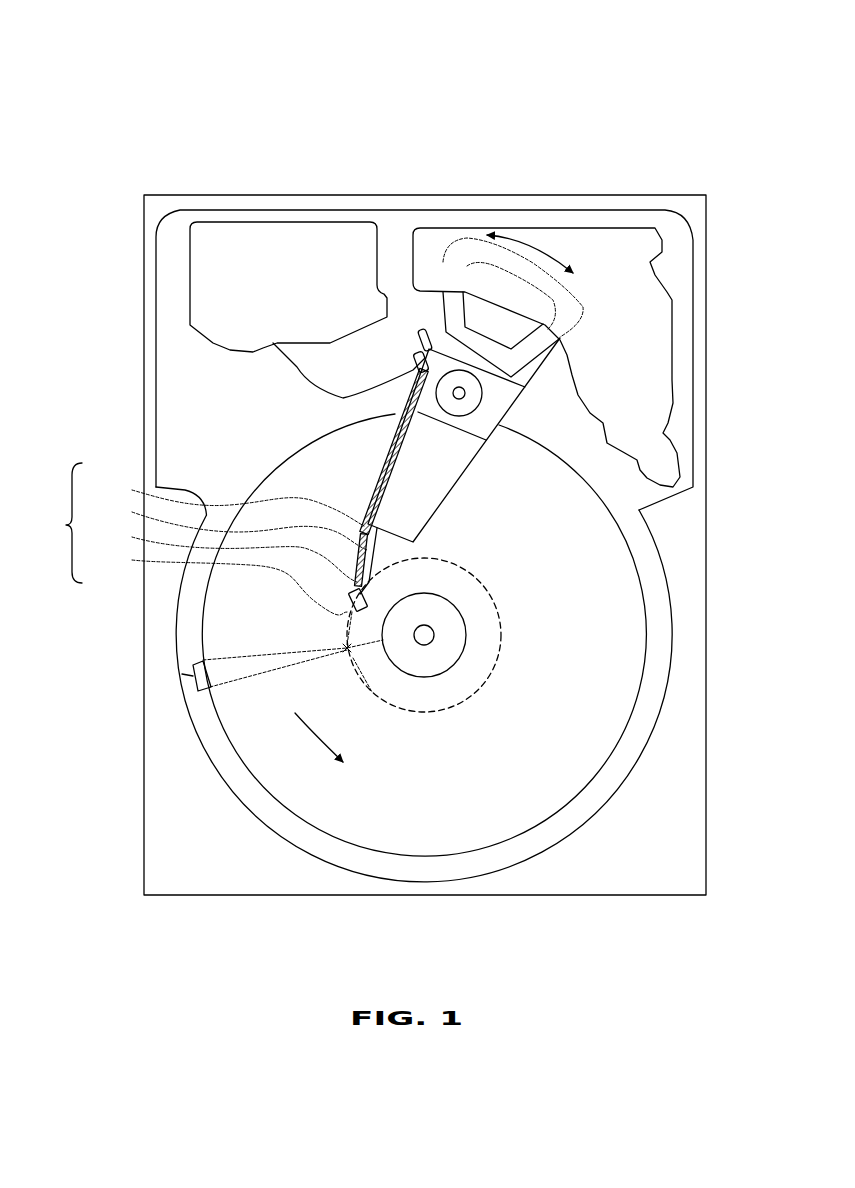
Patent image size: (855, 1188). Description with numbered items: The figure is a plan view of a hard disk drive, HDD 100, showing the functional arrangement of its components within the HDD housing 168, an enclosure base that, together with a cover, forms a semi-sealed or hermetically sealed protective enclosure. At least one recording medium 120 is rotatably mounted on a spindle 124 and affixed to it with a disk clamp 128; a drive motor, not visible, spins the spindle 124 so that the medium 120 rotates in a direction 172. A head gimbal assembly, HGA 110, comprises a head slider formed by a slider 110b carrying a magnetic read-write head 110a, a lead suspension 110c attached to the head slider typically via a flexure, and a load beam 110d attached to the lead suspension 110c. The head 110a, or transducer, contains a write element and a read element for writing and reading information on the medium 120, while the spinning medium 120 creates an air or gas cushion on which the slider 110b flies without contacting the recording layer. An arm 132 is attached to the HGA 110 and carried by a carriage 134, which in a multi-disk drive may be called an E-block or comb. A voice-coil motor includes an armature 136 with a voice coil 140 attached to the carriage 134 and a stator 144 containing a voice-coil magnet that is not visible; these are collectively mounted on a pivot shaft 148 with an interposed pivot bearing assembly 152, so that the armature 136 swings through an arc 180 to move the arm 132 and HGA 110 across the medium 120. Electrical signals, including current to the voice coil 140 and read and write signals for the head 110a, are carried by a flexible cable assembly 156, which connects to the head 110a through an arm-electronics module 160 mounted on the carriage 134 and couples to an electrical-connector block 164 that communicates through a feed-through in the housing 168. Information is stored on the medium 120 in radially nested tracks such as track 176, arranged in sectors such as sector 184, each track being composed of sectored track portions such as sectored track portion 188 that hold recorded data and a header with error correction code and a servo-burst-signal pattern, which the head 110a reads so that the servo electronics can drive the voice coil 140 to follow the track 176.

The hard disk drive 100 is at (82, 92).
The head gimbal assembly 110 is at (53, 523).
The magnetic read-write head 110a is at (215, 583).
The slider 110b is at (220, 553).
The lead suspension 110c is at (225, 524).
The load beam 110d is at (223, 499).
The recording medium 120 is at (587, 592).
The spindle 124 is at (434, 633).
The disk clamp 128 is at (445, 648).
The arm 132 is at (418, 492).
The carriage 134 is at (475, 422).
The armature 136 is at (443, 297).
The voice coil 140 is at (456, 300).
The stator 144 is at (645, 310).
The pivot shaft 148 is at (466, 393).
The pivot bearing assembly 152 is at (474, 402).
The flexible cable assembly 156 is at (297, 373).
The arm-electronics module 160 is at (412, 356).
The electrical-connector block 164 is at (215, 285).
The HDD housing 168 is at (690, 208).
The direction 172 is at (327, 737).
The track 176 is at (490, 602).
The arc 180 is at (523, 247).
The sector 184 is at (183, 676).
The sectored track portion 188 is at (340, 645).